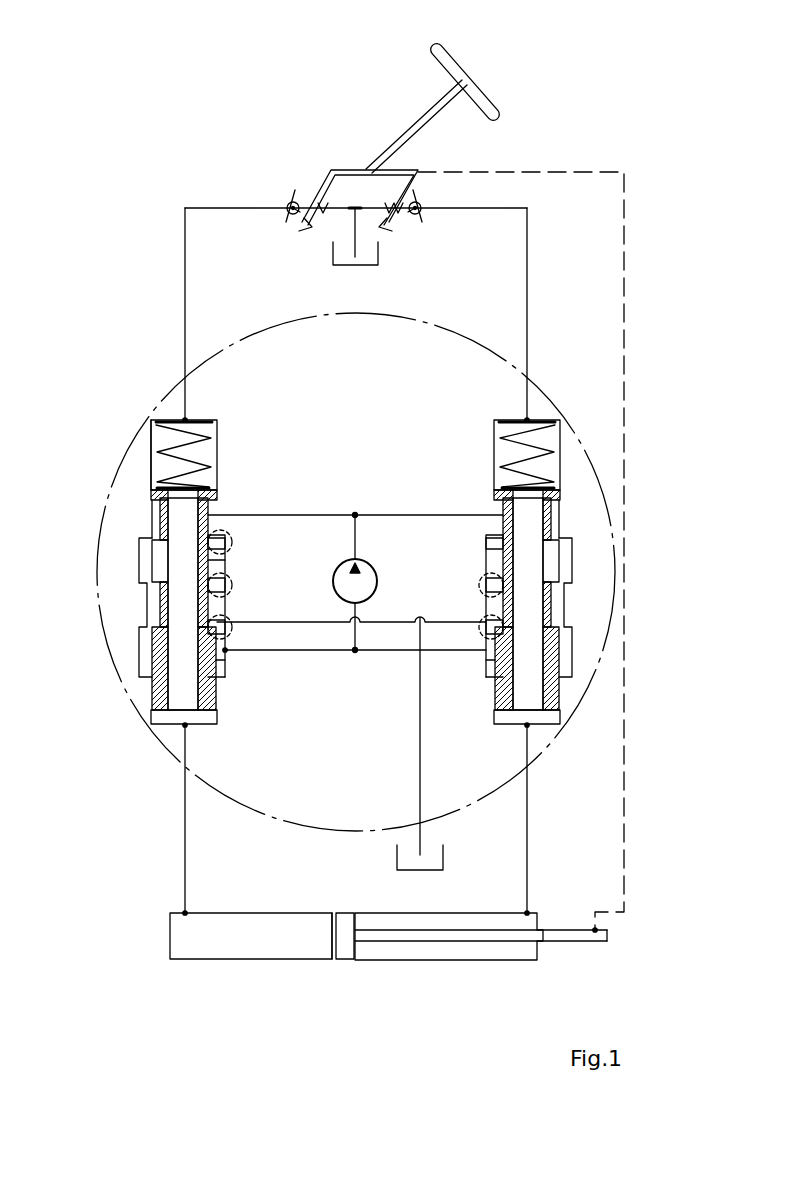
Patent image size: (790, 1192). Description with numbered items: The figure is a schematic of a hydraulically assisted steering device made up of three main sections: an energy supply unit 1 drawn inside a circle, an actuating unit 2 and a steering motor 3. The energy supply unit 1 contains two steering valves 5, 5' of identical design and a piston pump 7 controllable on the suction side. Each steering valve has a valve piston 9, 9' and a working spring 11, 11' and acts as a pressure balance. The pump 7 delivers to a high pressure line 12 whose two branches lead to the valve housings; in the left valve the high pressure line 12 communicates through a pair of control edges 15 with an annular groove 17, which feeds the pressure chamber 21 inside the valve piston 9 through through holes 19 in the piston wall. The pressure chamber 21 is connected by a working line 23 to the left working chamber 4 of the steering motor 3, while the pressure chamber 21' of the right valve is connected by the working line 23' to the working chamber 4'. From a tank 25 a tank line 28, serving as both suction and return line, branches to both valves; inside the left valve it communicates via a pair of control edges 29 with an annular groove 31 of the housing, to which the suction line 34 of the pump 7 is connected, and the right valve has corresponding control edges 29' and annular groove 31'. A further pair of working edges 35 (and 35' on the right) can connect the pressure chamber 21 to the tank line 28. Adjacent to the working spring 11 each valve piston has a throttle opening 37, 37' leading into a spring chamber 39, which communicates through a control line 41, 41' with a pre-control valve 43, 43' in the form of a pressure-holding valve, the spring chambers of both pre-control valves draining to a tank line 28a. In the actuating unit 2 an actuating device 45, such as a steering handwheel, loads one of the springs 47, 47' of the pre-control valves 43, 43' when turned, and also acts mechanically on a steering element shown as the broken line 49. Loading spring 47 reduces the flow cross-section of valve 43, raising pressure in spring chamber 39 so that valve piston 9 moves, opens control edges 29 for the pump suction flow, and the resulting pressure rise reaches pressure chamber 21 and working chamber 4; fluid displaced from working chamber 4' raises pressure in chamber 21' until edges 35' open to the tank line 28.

The energy supply unit 1 is at (155, 394).
The actuating unit 2 is at (328, 148).
The steering motor 3 is at (315, 961).
The left working chamber 4 is at (248, 989).
The working chamber 4' is at (481, 989).
The steering valve 5 is at (140, 572).
The steering valve 5' is at (593, 572).
The piston pump 7 is at (362, 584).
The valve piston 9 is at (135, 604).
The valve piston 9' is at (596, 609).
The working spring 11 is at (223, 436).
The working spring 11' is at (482, 437).
The high pressure line 12 is at (354, 556).
The pair of control edges 15 is at (232, 540).
The annular groove 17 is at (228, 567).
The through holes 19 is at (162, 558).
The pressure chamber 21 is at (121, 630).
The pressure chamber 21' is at (613, 604).
The working line 23 is at (116, 819).
The working line 23' is at (618, 819).
The tank 25 is at (366, 257).
The tank line 28 is at (420, 778).
The tank line 28a is at (355, 236).
The pair of control edges 29 is at (268, 631).
The pair of control edges 29' is at (467, 632).
The annular groove 31 is at (256, 682).
The annular groove 31' is at (470, 694).
The suction line 34 is at (356, 628).
The pair of working edges 35 is at (277, 590).
The pair of control edges 35' is at (461, 589).
The throttle opening 37 is at (214, 473).
The throttle opening 37' is at (482, 473).
The spring chamber 39 is at (163, 465).
The control line 41 is at (285, 301).
The control line 41' is at (618, 315).
The pre-control valve 43 is at (203, 121).
The pre-control valve 43' is at (561, 177).
The actuating device 45 is at (470, 80).
The spring 47 is at (251, 116).
The spring 47' is at (392, 116).
The steering element 49 is at (627, 397).